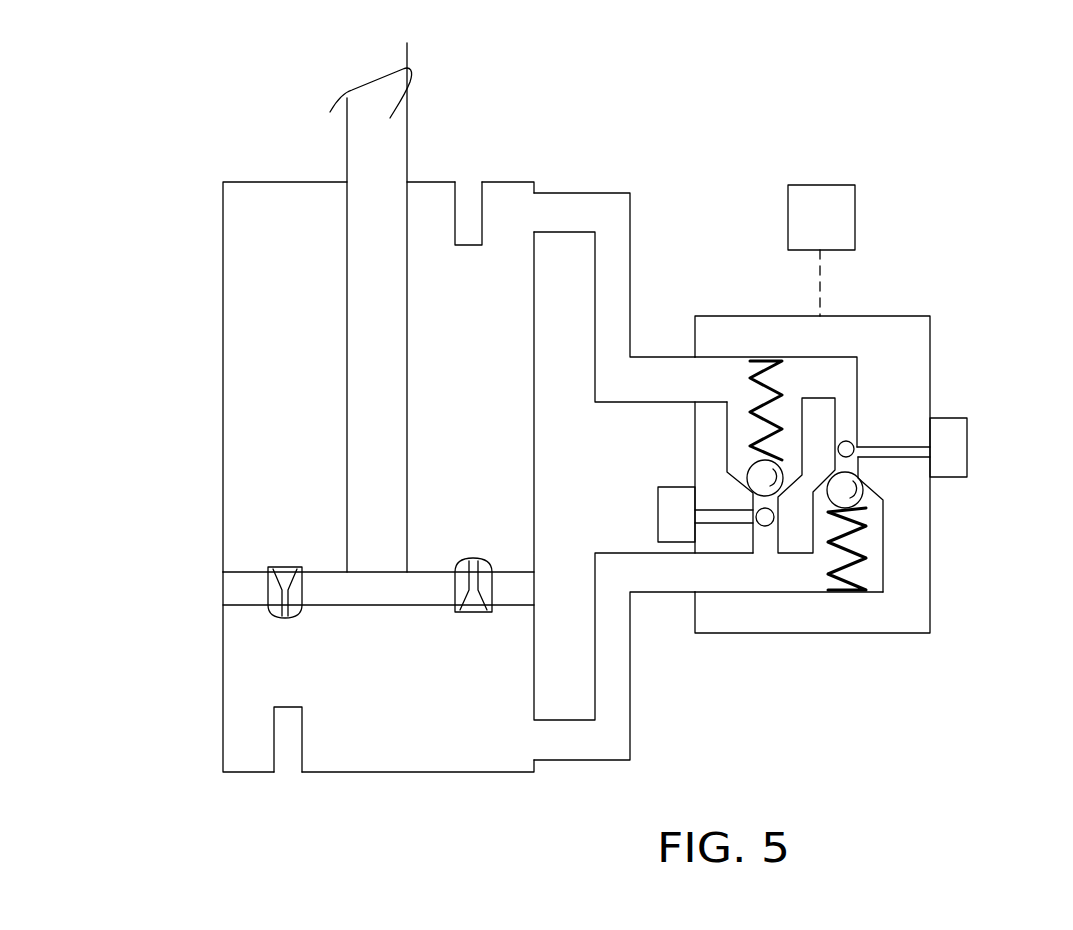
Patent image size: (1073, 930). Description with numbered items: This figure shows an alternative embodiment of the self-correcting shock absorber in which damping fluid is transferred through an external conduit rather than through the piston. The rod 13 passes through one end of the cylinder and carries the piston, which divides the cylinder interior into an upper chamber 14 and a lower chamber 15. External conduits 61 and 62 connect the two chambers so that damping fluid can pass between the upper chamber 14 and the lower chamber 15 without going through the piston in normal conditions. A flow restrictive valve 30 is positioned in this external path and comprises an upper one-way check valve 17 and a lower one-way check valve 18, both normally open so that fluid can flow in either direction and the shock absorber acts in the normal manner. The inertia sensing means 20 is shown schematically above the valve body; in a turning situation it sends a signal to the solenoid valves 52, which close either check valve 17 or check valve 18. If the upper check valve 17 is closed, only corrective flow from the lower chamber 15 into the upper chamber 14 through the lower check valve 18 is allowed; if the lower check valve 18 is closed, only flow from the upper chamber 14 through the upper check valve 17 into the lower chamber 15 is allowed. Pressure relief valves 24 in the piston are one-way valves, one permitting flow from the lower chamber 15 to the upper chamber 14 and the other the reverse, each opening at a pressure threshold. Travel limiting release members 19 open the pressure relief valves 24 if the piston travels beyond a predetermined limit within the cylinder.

The rod 13 is at (407, 90).
The upper chamber 14 is at (235, 335).
The lower chamber 15 is at (243, 653).
The upper one-way check valve 17 is at (883, 528).
The lower one-way check valve 18 is at (802, 440).
The travel limiting release member 19 is at (483, 196).
The inertia sensing means 20 is at (821, 250).
The pressure relief valve 24 is at (285, 567).
The flow restrictive valve 30 is at (900, 316).
The solenoid valve 52 is at (672, 495).
The conduit 61 is at (630, 232).
The conduit 62 is at (630, 702).